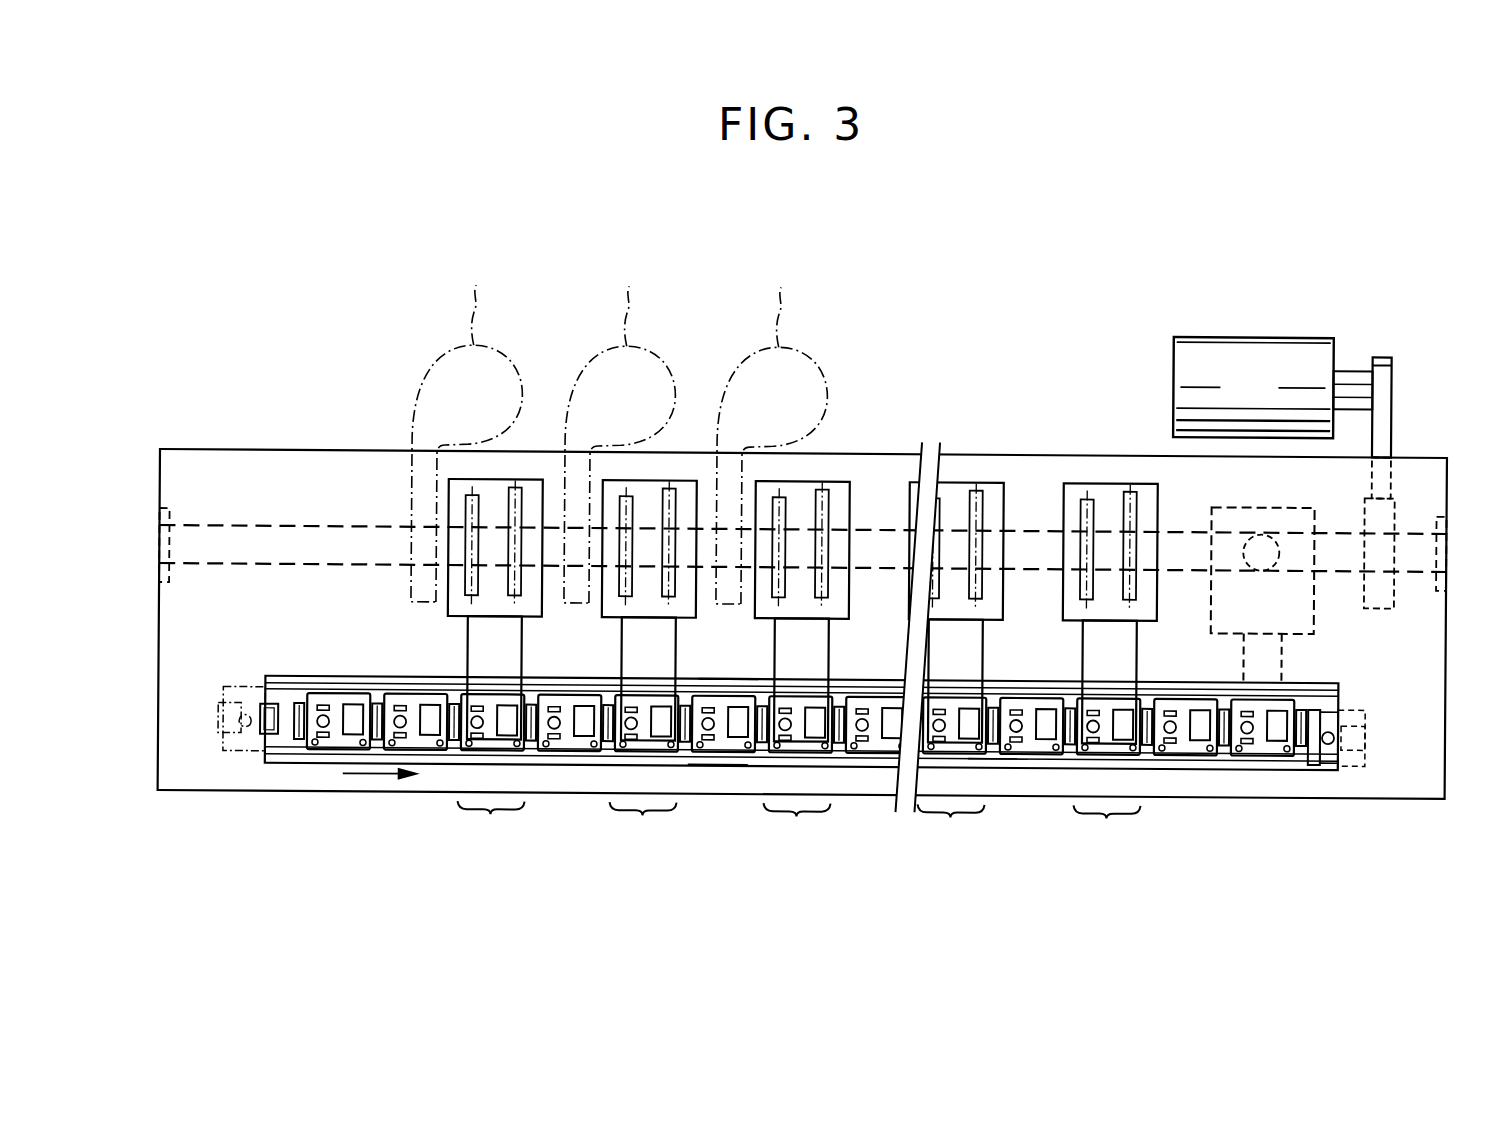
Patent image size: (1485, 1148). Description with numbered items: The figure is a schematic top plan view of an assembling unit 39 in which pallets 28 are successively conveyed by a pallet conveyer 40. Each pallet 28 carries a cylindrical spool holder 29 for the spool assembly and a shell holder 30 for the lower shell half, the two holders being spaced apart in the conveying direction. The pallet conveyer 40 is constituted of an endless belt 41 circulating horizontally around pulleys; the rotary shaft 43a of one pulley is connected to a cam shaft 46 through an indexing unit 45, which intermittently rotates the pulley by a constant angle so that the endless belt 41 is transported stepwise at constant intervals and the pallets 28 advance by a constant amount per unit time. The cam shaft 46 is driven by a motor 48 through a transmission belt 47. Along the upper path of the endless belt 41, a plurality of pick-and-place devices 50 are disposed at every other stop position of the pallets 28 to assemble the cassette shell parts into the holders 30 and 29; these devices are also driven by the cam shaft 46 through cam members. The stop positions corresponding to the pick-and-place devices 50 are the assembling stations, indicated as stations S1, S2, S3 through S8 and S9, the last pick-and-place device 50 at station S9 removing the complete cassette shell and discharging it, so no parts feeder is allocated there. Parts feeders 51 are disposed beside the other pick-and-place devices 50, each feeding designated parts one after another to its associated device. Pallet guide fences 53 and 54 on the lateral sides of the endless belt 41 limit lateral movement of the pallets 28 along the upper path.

The assembling unit 39 is at (287, 420).
The cam shaft 46 is at (340, 523).
The pallet conveyer 40 is at (336, 648).
The pallet 28 is at (567, 748).
The spool holder 29 is at (568, 715).
The shell holder 30 is at (584, 733).
The pick-and-place device 50 is at (525, 477).
The parts feeder 51 is at (619, 425).
The pallet guide fence 53 is at (730, 678).
The pallet guide fence 54 is at (717, 762).
The endless belt 41 is at (990, 755).
The motor 48 is at (1255, 330).
The transmission belt 47 is at (1383, 420).
The indexing unit 45 is at (1318, 606).
The rotary shaft 43a is at (1285, 662).
The assembling station S1 is at (490, 828).
The assembling station S2 is at (642, 829).
The assembling station S3 is at (885, 835).
The assembling station S8 is at (950, 831).
The assembling station S9 is at (1106, 832).